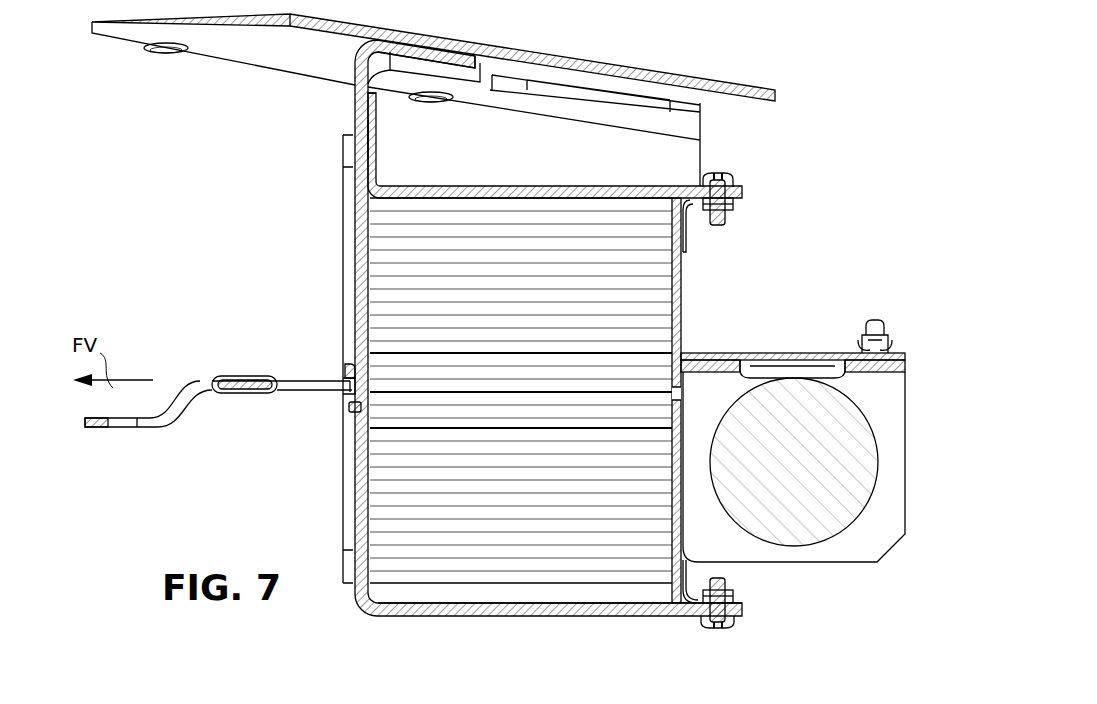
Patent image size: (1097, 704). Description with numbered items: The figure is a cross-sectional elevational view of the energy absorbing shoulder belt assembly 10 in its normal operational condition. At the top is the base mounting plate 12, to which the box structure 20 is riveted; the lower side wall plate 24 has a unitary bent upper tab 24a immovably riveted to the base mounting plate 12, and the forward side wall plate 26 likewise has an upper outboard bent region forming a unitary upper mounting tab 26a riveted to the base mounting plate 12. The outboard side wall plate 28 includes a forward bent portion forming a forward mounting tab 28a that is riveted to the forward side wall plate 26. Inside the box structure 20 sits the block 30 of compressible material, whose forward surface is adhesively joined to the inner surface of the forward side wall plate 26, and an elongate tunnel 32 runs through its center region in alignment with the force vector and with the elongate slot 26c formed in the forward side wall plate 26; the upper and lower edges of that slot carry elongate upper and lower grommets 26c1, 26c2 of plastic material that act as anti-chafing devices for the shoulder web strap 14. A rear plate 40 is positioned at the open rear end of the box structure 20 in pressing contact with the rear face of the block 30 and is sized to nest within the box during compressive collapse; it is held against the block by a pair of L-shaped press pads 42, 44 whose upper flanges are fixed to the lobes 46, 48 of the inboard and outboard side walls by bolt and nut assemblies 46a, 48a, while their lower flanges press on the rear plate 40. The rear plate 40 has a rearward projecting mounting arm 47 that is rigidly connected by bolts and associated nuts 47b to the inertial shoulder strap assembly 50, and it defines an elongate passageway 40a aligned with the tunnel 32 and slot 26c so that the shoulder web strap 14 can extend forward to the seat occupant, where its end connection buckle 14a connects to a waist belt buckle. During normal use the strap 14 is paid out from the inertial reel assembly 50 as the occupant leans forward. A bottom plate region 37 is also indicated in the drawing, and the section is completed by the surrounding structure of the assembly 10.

The shoulder belt assembly 10 is at (846, 197).
The base mounting plate 12 is at (240, 52).
The shoulder web strap 14 is at (300, 392).
The end connection buckle 14a is at (95, 428).
The box structure 20 is at (338, 248).
The lower side wall plate 24 is at (569, 161).
The upper tab 24a is at (640, 97).
The forward side wall plate 26 is at (360, 312).
The upper mounting tab 26a is at (437, 49).
The elongate slot 26c is at (348, 384).
The upper grommet 26c1 is at (350, 371).
The lower grommet 26c2 is at (352, 407).
The outboard side wall plate 28 is at (455, 190).
The forward mounting tab 28a is at (372, 115).
The block of compressible material 30 is at (526, 281).
The elongate tunnel 32 is at (500, 413).
The bottom plate 37 is at (580, 613).
The rear plate 40 is at (680, 276).
The elongate passageway 40a is at (676, 398).
The press pad 42 is at (688, 570).
The press pad 44 is at (686, 247).
The lobe 46 is at (746, 610).
The bolt and nut assembly 46a is at (722, 628).
The mounting arm 47 is at (810, 352).
The nut 47b is at (886, 340).
The lobe 48 is at (745, 194).
The bolt and nut assembly 48a is at (720, 176).
The inertial shoulder strap assembly 50 is at (890, 494).